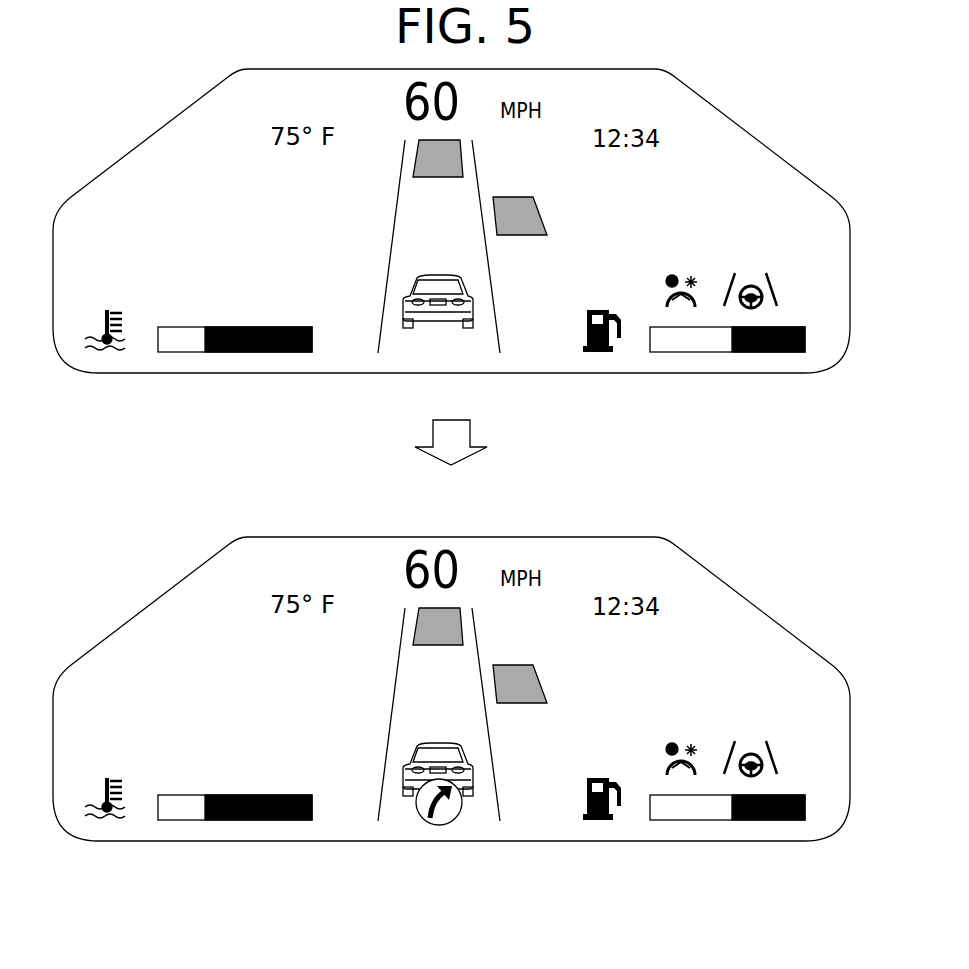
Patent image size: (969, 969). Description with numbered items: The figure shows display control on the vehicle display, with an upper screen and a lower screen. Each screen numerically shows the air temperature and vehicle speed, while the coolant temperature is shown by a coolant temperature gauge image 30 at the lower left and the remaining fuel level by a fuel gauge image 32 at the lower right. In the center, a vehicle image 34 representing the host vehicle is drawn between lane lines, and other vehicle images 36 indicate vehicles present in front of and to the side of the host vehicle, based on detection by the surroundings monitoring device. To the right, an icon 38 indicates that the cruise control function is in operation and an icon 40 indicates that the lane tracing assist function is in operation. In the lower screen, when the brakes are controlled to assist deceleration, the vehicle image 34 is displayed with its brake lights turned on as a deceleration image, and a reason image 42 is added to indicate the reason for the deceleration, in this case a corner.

The coolant temperature gauge image 30 is at (253, 363).
The fuel gauge image 32 is at (717, 363).
The vehicle image 34 is at (435, 277).
The other vehicle images 36 is at (460, 143).
The icon 38 is at (675, 262).
The icon 40 is at (755, 262).
The reason image 42 is at (440, 836).